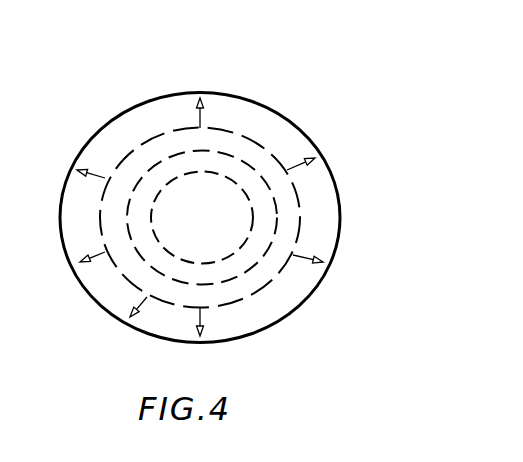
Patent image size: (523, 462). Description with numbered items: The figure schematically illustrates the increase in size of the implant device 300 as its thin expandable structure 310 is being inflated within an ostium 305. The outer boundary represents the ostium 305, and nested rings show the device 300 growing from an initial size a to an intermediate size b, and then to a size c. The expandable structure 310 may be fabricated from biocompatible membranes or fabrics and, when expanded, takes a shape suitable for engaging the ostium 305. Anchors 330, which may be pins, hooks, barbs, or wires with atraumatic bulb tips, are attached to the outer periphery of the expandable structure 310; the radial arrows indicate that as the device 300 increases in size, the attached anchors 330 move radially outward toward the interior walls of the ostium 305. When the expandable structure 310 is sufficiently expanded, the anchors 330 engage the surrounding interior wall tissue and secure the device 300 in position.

The device 300 is at (233, 229).
The ostium 305 is at (320, 150).
The expandable structure 310 is at (228, 128).
The anchors 330 is at (300, 257).
The initial size a is at (146, 228).
The intermediate size b is at (123, 228).
The size c is at (88, 228).